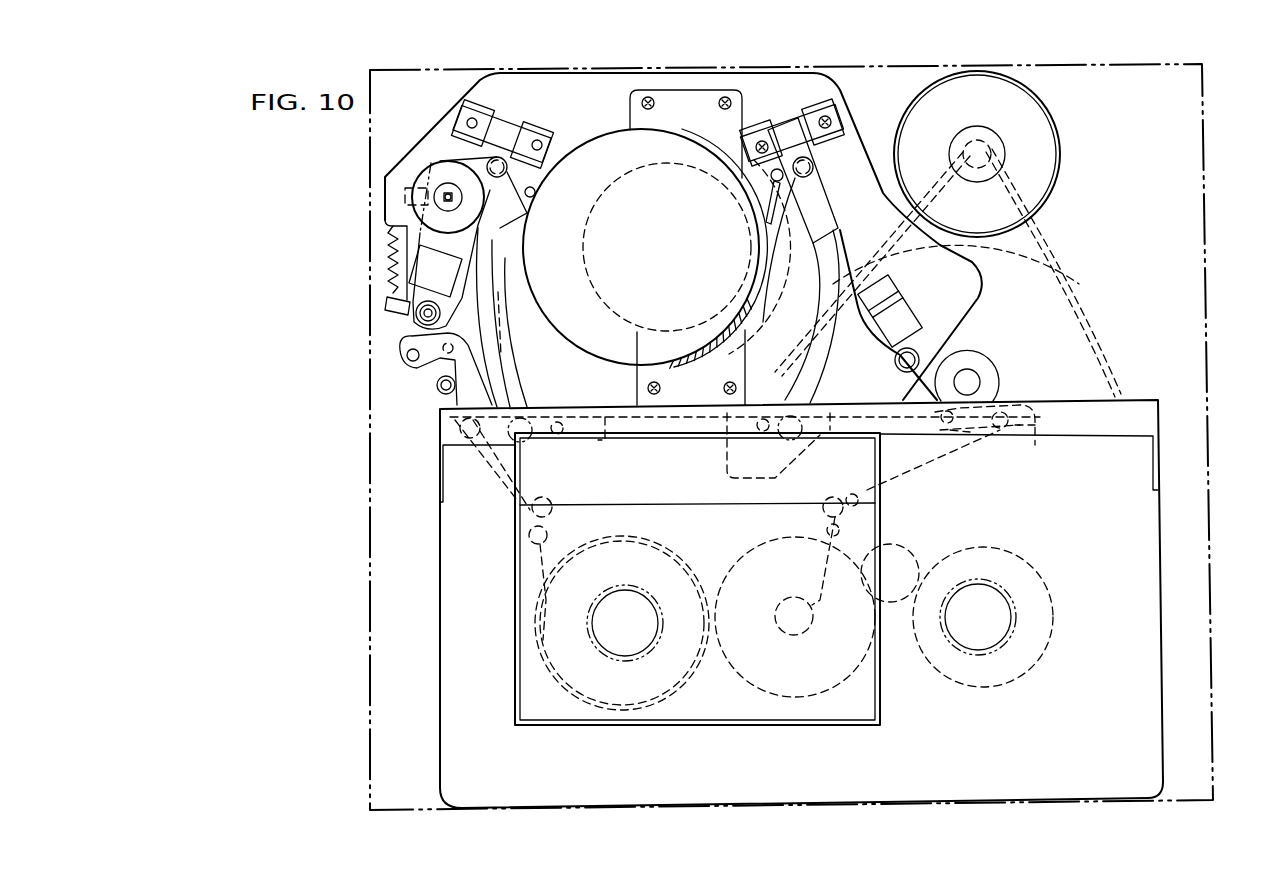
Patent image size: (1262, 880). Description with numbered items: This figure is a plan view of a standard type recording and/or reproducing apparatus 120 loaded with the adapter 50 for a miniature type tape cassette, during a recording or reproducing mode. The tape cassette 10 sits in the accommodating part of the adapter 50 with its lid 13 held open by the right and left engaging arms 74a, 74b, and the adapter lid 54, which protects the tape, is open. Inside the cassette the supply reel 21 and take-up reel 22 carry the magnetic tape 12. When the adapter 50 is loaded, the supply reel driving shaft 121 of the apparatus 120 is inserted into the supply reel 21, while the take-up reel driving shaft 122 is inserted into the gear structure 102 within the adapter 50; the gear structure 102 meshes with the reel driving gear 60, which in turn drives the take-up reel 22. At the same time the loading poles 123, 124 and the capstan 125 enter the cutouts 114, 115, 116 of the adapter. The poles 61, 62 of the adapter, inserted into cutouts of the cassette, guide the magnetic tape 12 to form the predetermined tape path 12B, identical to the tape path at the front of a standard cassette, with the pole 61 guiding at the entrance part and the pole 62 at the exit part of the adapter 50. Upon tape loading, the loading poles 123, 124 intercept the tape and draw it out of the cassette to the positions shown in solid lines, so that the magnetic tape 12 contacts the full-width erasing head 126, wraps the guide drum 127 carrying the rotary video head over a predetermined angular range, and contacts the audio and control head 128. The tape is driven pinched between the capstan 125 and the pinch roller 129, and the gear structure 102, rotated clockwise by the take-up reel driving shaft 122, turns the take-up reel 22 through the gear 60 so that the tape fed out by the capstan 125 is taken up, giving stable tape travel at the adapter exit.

The standard type recording and/or reproducing apparatus 120 is at (1243, 107).
The adapter 50 is at (1165, 582).
The lid 54 is at (1137, 402).
The tape cassette 10 is at (722, 723).
The supply reel 21 is at (534, 642).
The supply reel driving shaft 121 is at (637, 653).
The take-up reel 22 is at (797, 698).
The reel driving gear 60 is at (902, 547).
The gear structure 102 is at (1042, 577).
The take-up reel driving shaft 122 is at (1000, 651).
The left engaging arm 74b is at (544, 478).
The right engaging arm 74a is at (865, 450).
The pole 62 is at (461, 429).
The cutout 114 is at (538, 458).
The cutout 115 is at (728, 456).
The cutout 116 is at (946, 420).
The capstan 125 is at (957, 428).
The pole 61 is at (1028, 425).
The guide drum 127 is at (598, 137).
The tape path 12B is at (680, 418).
The full-width erasing head 126 is at (407, 263).
The loading pole 123 is at (483, 160).
The magnetic tape 12 is at (481, 251).
The loading pole 124 is at (815, 167).
The lid 13 is at (845, 436).
The audio and control head 128 is at (893, 283).
The pinch roller 129 is at (979, 360).